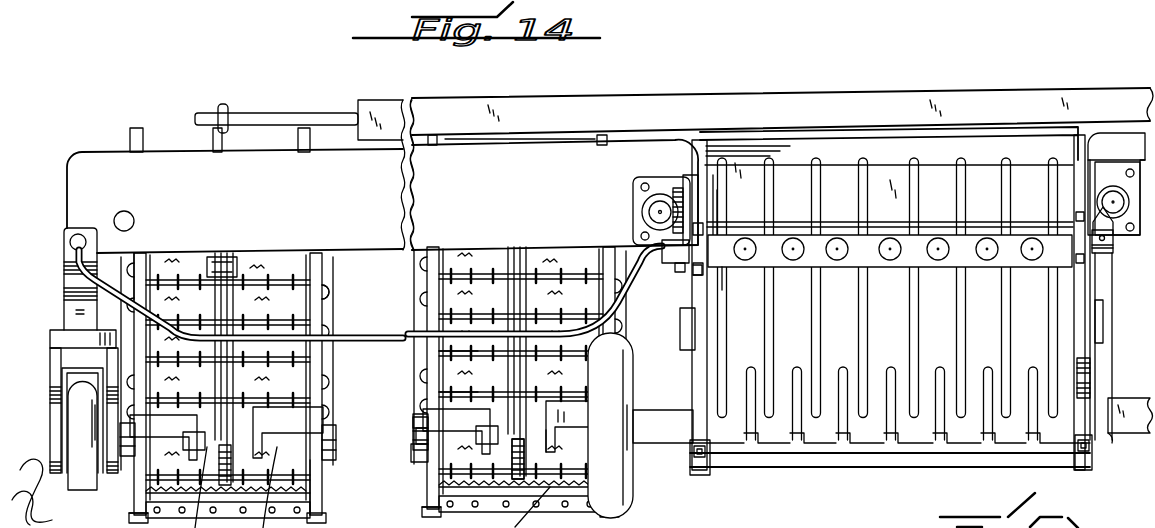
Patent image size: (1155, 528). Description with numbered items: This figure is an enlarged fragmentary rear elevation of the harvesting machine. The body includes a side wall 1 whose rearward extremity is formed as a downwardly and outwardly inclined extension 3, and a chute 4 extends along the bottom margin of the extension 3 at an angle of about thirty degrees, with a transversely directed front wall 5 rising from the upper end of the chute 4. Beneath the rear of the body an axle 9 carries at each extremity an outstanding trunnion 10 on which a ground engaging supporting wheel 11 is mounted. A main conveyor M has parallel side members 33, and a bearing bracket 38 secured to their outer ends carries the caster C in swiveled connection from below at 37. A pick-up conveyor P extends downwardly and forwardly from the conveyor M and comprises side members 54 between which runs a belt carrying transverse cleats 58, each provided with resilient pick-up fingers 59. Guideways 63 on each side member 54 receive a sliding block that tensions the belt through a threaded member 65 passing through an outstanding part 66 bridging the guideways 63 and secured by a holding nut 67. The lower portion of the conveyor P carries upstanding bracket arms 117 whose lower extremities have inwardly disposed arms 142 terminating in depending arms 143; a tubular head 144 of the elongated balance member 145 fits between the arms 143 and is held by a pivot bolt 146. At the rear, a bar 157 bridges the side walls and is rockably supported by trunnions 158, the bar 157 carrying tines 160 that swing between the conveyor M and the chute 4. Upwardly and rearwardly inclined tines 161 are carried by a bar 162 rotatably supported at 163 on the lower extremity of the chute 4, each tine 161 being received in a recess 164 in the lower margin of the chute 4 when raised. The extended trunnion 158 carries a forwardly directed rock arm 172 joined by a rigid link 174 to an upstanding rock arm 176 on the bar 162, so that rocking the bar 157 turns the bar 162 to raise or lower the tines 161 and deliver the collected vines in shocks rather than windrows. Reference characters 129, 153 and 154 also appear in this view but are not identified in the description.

The side wall 1 is at (299, 119).
The inclined extension 3 is at (1087, 353).
The chute 4 is at (743, 347).
The front wall 5 is at (943, 172).
The axle 9 is at (1127, 398).
The trunnion 10 is at (638, 427).
The ground engaging supporting wheel 11 is at (620, 357).
The side portion 33 is at (100, 160).
The swiveled connection 37 is at (50, 345).
The bearing bracket 38 is at (64, 296).
The side member 54 is at (137, 262).
The cleat 58 is at (441, 380).
The pick-up finger 59 is at (445, 358).
The guideway 63 is at (134, 493).
The threaded member 65 is at (416, 422).
The outstanding part 66 is at (420, 455).
The holding nut 67 is at (418, 437).
The bracket arm 117 is at (330, 291).
The post 129 is at (228, 147).
The inwardly disposed arm 142 is at (323, 415).
The depending arm 143 is at (195, 426).
The tubular head 144 is at (505, 450).
The balance member 145 is at (225, 257).
The pivot bolt 146 is at (555, 438).
The tube 153 is at (373, 333).
The hanger 154 is at (70, 242).
The bar 157 is at (850, 262).
The trunnion 158 is at (1112, 252).
The tine 160 is at (768, 278).
The tine 161 is at (887, 365).
The bar 162 is at (922, 455).
The rotatable support 163 is at (705, 470).
The recess 164 is at (828, 438).
The rock arm 172 is at (1100, 206).
The link 174 is at (1112, 325).
The rock arm 176 is at (1112, 440).
The caster C is at (42, 390).
The conveyor M is at (550, 152).
The pick-up conveyor P is at (419, 298).